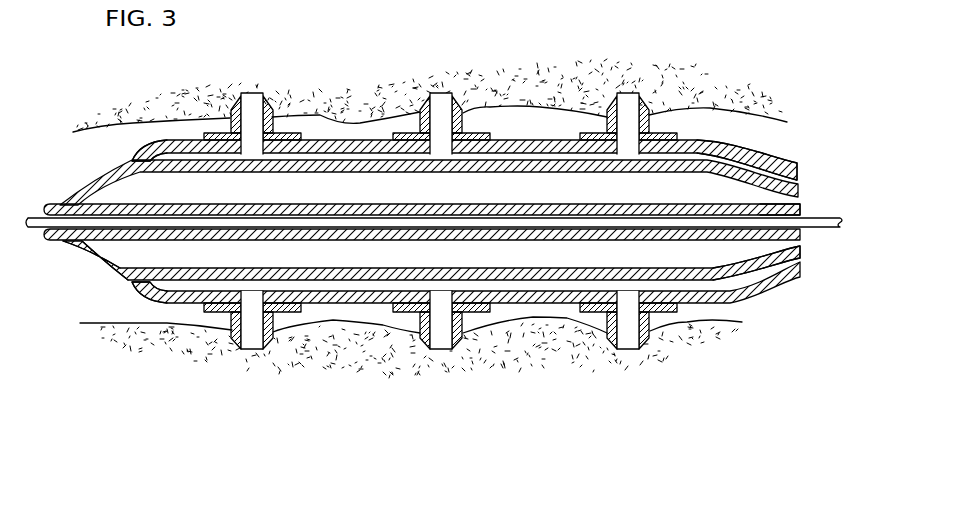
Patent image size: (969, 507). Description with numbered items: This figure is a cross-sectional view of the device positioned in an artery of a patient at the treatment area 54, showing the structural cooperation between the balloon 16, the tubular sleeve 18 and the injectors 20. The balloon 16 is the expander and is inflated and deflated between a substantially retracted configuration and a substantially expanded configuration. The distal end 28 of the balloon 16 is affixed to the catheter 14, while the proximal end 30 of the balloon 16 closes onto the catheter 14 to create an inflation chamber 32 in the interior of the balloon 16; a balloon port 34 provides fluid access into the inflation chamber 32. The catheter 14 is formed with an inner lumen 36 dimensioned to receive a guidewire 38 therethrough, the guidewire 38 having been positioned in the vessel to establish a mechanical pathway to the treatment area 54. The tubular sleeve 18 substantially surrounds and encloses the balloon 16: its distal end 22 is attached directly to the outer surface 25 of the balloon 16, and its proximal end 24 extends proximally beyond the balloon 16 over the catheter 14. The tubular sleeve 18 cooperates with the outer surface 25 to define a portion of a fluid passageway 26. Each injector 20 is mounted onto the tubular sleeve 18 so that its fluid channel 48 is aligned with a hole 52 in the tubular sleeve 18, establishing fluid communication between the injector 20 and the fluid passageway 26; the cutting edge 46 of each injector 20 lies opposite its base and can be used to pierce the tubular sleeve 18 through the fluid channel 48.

The catheter 14 is at (433, 211).
The inflatable balloon 16 is at (435, 210).
The tubular sleeve 18 is at (163, 307).
The injector 20 is at (448, 223).
The distal end of tubular sleeve 22 is at (135, 147).
The proximal end of tubular sleeve 24 is at (780, 157).
The outer surface of balloon 25 is at (143, 293).
The fluid passageway 26 is at (445, 223).
The distal end of balloon 28 is at (82, 248).
The proximal end of balloon 30 is at (802, 252).
The inflation chamber 32 is at (347, 256).
The balloon port 34 is at (802, 242).
The inner lumen 36 is at (62, 212).
The guidewire 38 is at (30, 228).
The cutting edge 46 is at (248, 94).
The fluid channel 48 is at (217, 128).
The hole 52 is at (439, 143).
The treatment area 54 is at (533, 78).